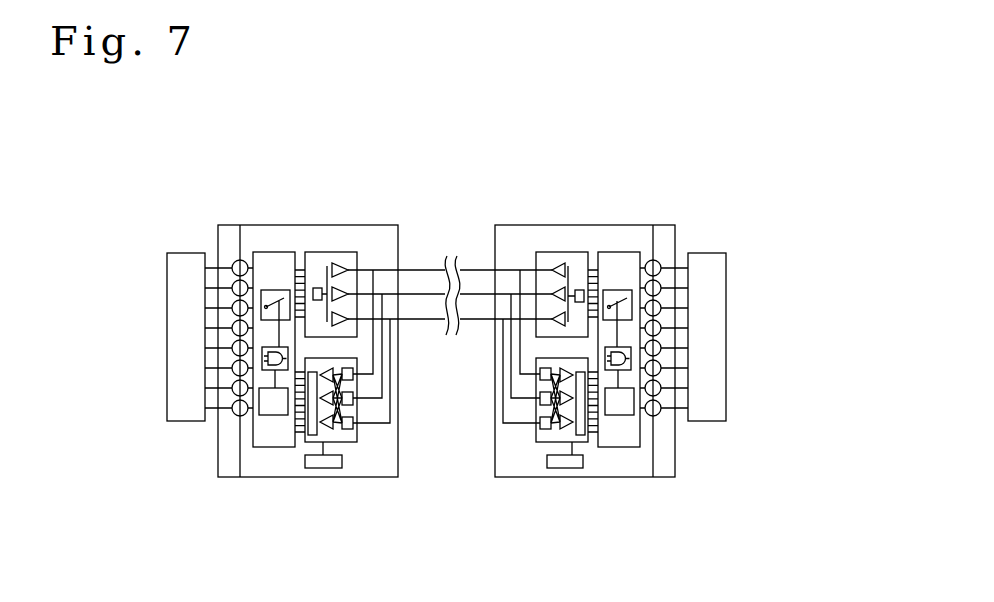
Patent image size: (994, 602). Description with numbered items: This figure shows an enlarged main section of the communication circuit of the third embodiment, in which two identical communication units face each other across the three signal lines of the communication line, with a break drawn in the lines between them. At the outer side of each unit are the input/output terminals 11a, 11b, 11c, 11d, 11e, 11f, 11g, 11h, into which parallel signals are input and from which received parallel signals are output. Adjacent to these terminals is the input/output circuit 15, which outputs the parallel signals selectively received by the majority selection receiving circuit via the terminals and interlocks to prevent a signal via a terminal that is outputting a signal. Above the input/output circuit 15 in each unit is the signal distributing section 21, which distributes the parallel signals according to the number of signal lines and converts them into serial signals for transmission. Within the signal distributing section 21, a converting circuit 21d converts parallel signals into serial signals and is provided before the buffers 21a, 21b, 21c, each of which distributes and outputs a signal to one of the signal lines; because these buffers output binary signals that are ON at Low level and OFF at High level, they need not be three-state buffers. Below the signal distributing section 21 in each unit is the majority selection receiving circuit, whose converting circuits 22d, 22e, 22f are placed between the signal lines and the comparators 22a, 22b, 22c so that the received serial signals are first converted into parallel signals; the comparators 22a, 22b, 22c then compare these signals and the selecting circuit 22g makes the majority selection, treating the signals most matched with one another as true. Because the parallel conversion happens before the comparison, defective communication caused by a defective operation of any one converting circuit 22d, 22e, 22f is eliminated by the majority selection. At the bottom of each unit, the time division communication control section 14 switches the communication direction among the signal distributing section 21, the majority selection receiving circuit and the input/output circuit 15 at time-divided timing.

The input/output terminal 11a is at (205, 268).
The input/output terminal 11b is at (205, 288).
The input/output terminal 11c is at (205, 308).
The input/output terminal 11d is at (205, 328).
The input/output terminal 11e is at (205, 348).
The input/output terminal 11f is at (205, 368).
The input/output terminal 11g is at (205, 388).
The input/output terminal 11h is at (205, 408).
The time division communication control section 14 is at (334, 468).
The input/output circuit 15 is at (253, 438).
The signal distributing section 21 is at (325, 252).
The buffer 21a is at (338, 262).
The buffer 21b is at (342, 291).
The buffer 21c is at (348, 318).
The converting circuit 21d is at (316, 287).
The comparator 22a is at (330, 405).
The comparator 22b is at (312, 436).
The comparator 22c is at (324, 430).
The converting circuit 22d is at (356, 368).
The converting circuit 22e is at (356, 393).
The converting circuit 22f is at (356, 422).
The selecting circuit 22g is at (305, 425).